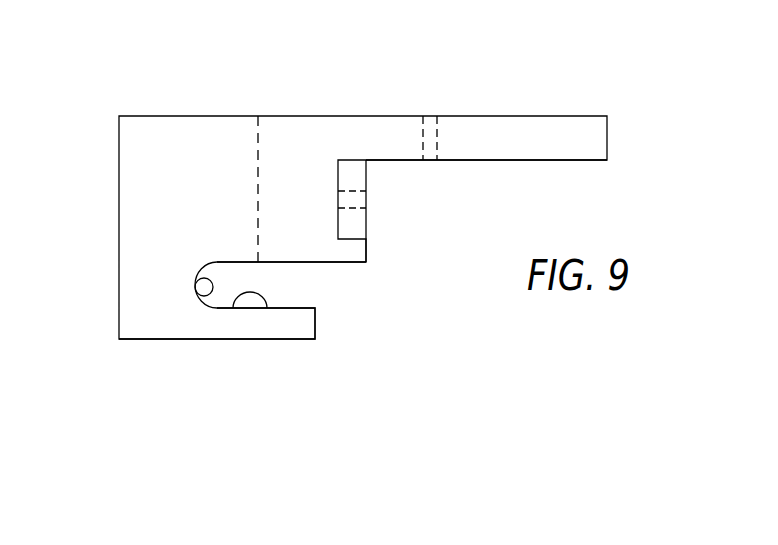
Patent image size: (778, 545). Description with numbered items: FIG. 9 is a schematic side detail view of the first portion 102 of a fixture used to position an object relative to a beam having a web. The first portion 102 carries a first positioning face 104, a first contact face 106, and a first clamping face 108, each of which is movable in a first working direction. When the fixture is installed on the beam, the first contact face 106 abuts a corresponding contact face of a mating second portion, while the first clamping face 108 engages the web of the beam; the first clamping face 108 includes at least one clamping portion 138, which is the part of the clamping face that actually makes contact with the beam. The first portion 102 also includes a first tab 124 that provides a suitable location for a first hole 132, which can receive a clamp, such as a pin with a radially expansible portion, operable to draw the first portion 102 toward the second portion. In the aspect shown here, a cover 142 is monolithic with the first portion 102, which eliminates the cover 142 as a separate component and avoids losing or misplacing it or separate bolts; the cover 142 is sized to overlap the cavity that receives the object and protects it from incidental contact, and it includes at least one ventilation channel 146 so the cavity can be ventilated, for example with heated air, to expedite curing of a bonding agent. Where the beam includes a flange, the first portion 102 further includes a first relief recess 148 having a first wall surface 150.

The first portion 102 is at (380, 79).
The first positioning face 104 is at (258, 138).
The first contact face 106 is at (353, 252).
The first clamping face 108 is at (316, 362).
The first tab 124 is at (353, 223).
The first hole 132 is at (367, 202).
The clamping portion 138 is at (315, 318).
The cover 142 is at (527, 132).
The ventilation channel 146 is at (430, 113).
The first relief recess 148 is at (200, 296).
The first wall surface 150 is at (268, 263).